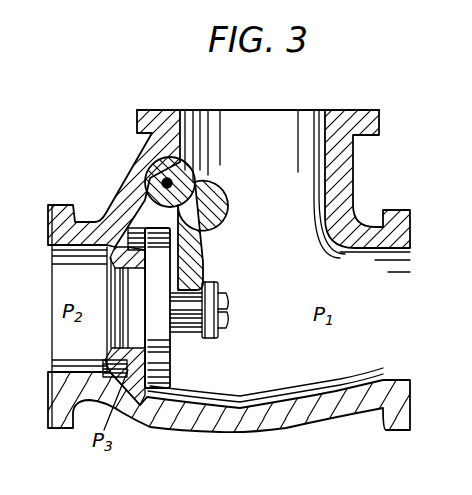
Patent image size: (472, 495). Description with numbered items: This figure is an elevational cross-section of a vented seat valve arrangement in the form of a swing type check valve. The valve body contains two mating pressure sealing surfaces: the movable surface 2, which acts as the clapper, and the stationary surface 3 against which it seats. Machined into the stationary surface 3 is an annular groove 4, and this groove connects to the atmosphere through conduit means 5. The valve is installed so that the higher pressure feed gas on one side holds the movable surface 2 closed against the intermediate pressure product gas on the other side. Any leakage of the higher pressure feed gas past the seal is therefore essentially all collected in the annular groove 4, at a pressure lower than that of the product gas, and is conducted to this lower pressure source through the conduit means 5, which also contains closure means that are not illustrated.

The movable surface 2 is at (160, 283).
The stationary surface 3 is at (137, 268).
The annular groove 4 is at (132, 258).
The conduit means 5 is at (143, 390).